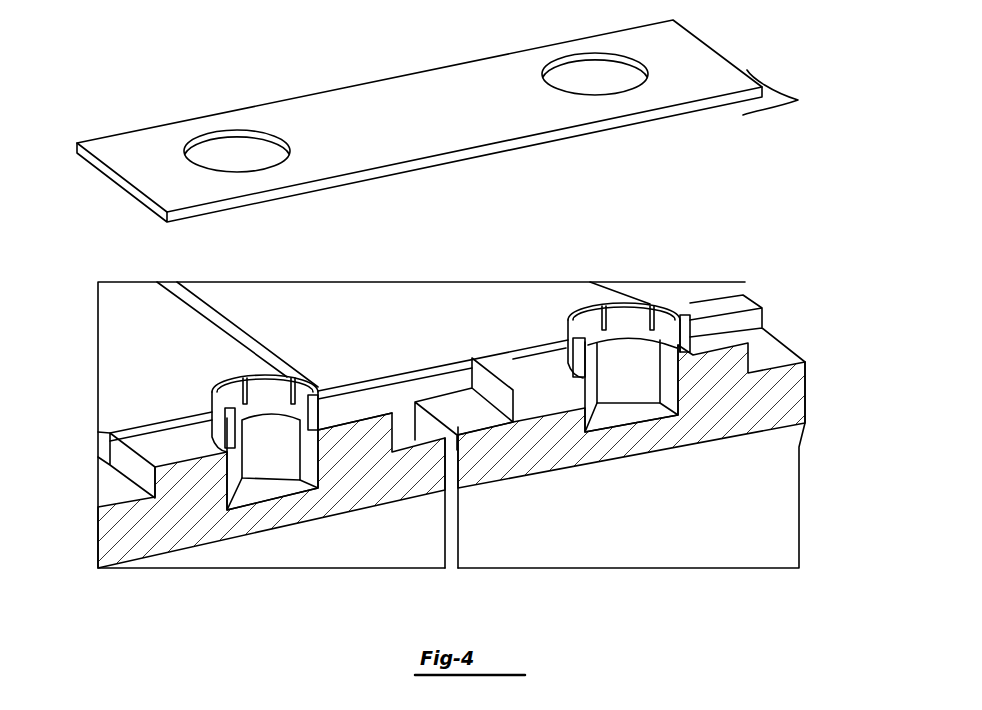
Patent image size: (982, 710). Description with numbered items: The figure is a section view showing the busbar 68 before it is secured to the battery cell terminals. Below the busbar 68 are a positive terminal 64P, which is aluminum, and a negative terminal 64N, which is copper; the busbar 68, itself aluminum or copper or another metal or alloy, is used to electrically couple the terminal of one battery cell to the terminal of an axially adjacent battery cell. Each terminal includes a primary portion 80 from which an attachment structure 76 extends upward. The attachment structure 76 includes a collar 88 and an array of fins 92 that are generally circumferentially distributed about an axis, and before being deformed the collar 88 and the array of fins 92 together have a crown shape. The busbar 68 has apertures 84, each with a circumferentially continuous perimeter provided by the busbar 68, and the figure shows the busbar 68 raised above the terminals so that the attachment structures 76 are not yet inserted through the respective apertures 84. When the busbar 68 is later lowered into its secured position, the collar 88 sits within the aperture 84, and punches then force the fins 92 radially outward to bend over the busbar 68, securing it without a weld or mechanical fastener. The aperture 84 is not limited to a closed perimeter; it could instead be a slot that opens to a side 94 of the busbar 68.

The busbar 68 is at (363, 96).
The aperture 84 is at (235, 152).
The side of the busbar 94 is at (798, 100).
The positive terminal 64P is at (127, 541).
The negative terminal 64N is at (801, 398).
The attachment structure 76 is at (505, 387).
The primary portion 80 is at (132, 467).
The collar 88 is at (290, 433).
The array of fins 92 is at (310, 407).